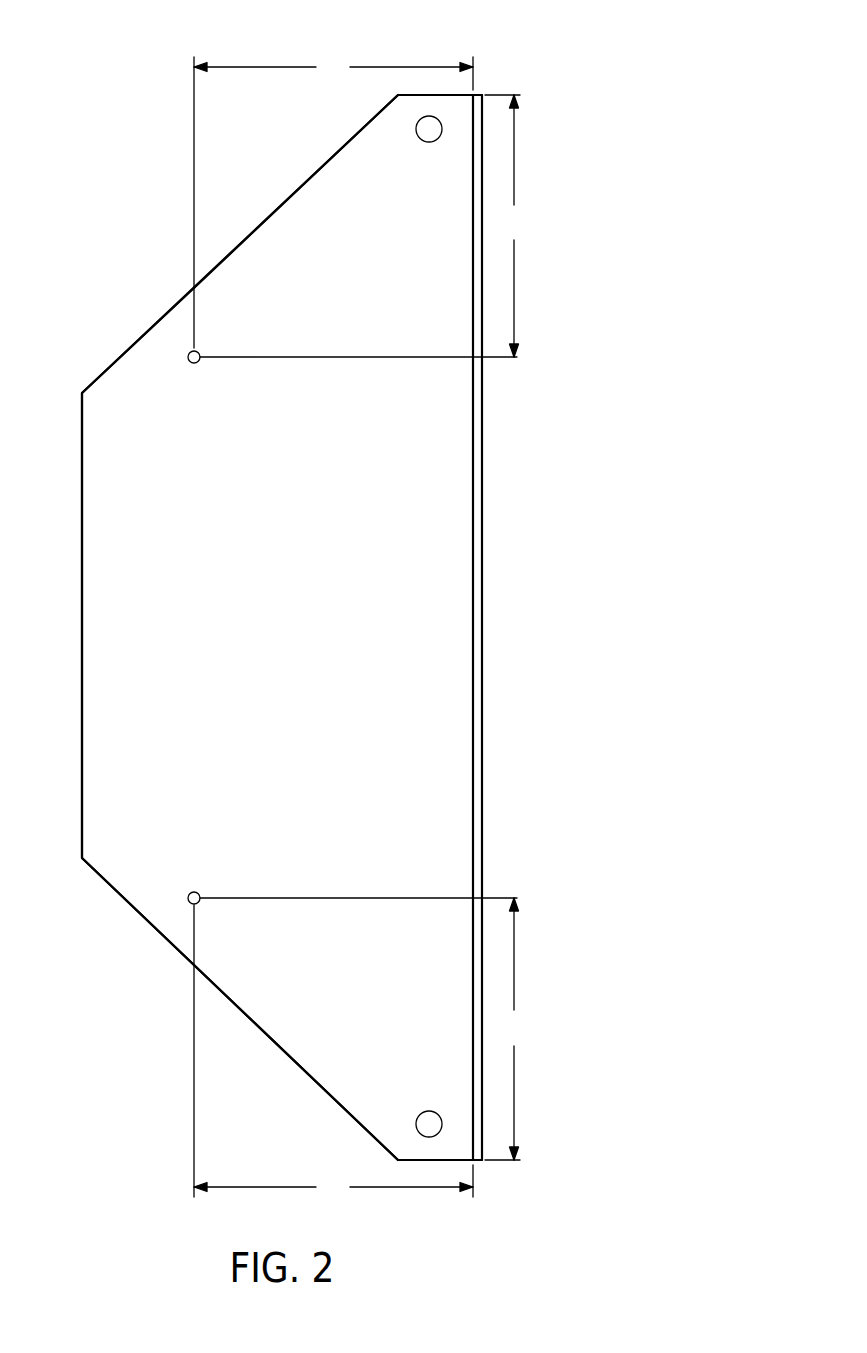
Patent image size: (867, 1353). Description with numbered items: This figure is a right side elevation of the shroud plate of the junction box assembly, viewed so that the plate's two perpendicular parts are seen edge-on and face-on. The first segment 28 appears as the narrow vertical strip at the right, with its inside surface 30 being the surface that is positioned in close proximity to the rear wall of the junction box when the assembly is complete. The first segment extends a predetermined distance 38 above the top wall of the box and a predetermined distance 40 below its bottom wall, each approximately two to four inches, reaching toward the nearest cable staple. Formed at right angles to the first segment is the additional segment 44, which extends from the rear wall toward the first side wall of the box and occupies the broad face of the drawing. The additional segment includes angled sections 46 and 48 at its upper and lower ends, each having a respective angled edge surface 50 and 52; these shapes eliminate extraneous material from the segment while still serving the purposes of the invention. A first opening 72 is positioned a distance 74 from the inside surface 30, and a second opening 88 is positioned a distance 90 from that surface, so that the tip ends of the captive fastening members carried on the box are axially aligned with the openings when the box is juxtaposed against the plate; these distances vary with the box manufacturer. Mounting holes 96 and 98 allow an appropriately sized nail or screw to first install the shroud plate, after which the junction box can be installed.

The first segment 28 is at (330, 627).
The inside surface 30 is at (473, 452).
The predetermined distance 38 is at (507, 226).
The predetermined distance 40 is at (507, 1029).
The additional segment 44 is at (85, 445).
The angled section 46 is at (231, 272).
The angled section 48 is at (225, 983).
The angled edge surface 50 is at (138, 310).
The angled edge surface 52 is at (117, 914).
The first opening 72 is at (332, 404).
The distance 74 is at (333, 200).
The second opening 88 is at (352, 851).
The distance 90 is at (333, 1053).
The mounting hole 96 is at (403, 174).
The mounting hole 98 is at (410, 1077).